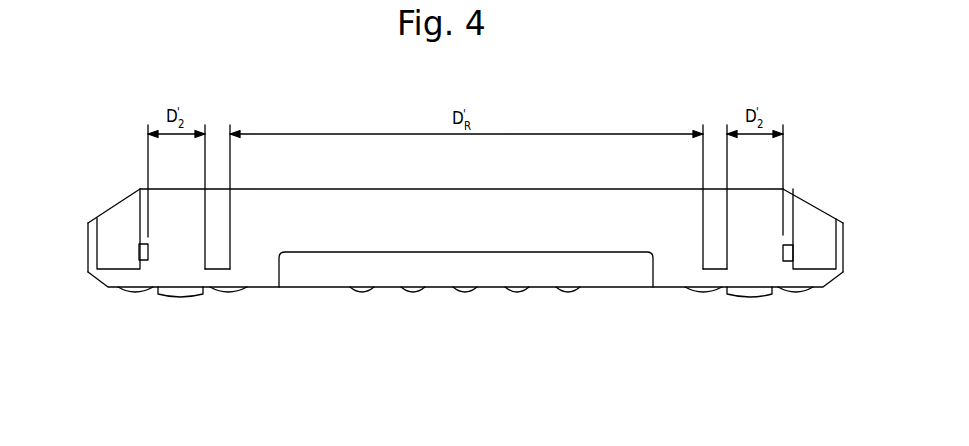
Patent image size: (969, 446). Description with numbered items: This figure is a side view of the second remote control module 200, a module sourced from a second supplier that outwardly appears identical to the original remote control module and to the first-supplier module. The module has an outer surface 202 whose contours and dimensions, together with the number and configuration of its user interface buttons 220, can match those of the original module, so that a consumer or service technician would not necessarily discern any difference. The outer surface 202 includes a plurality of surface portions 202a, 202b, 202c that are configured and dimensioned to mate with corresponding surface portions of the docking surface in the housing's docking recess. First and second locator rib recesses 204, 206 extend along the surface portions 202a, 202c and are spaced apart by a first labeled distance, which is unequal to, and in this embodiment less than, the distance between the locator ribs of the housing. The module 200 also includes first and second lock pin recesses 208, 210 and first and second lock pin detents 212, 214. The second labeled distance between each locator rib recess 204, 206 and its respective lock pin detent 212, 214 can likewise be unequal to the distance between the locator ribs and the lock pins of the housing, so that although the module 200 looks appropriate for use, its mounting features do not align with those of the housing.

The second remote control module 200 is at (268, 113).
The outer surface 202 is at (265, 288).
The surface portion 202a is at (340, 188).
The surface portion 202b is at (88, 223).
The surface portion 202c is at (86, 252).
The first locator rib recess 204 is at (230, 229).
The second locator rib recess 206 is at (703, 228).
The first lock pin recess 208 is at (118, 217).
The second lock pin recess 210 is at (813, 217).
The first lock pin detent 212 is at (148, 252).
The second lock pin detent 214 is at (783, 252).
The user interface buttons 220 is at (135, 292).